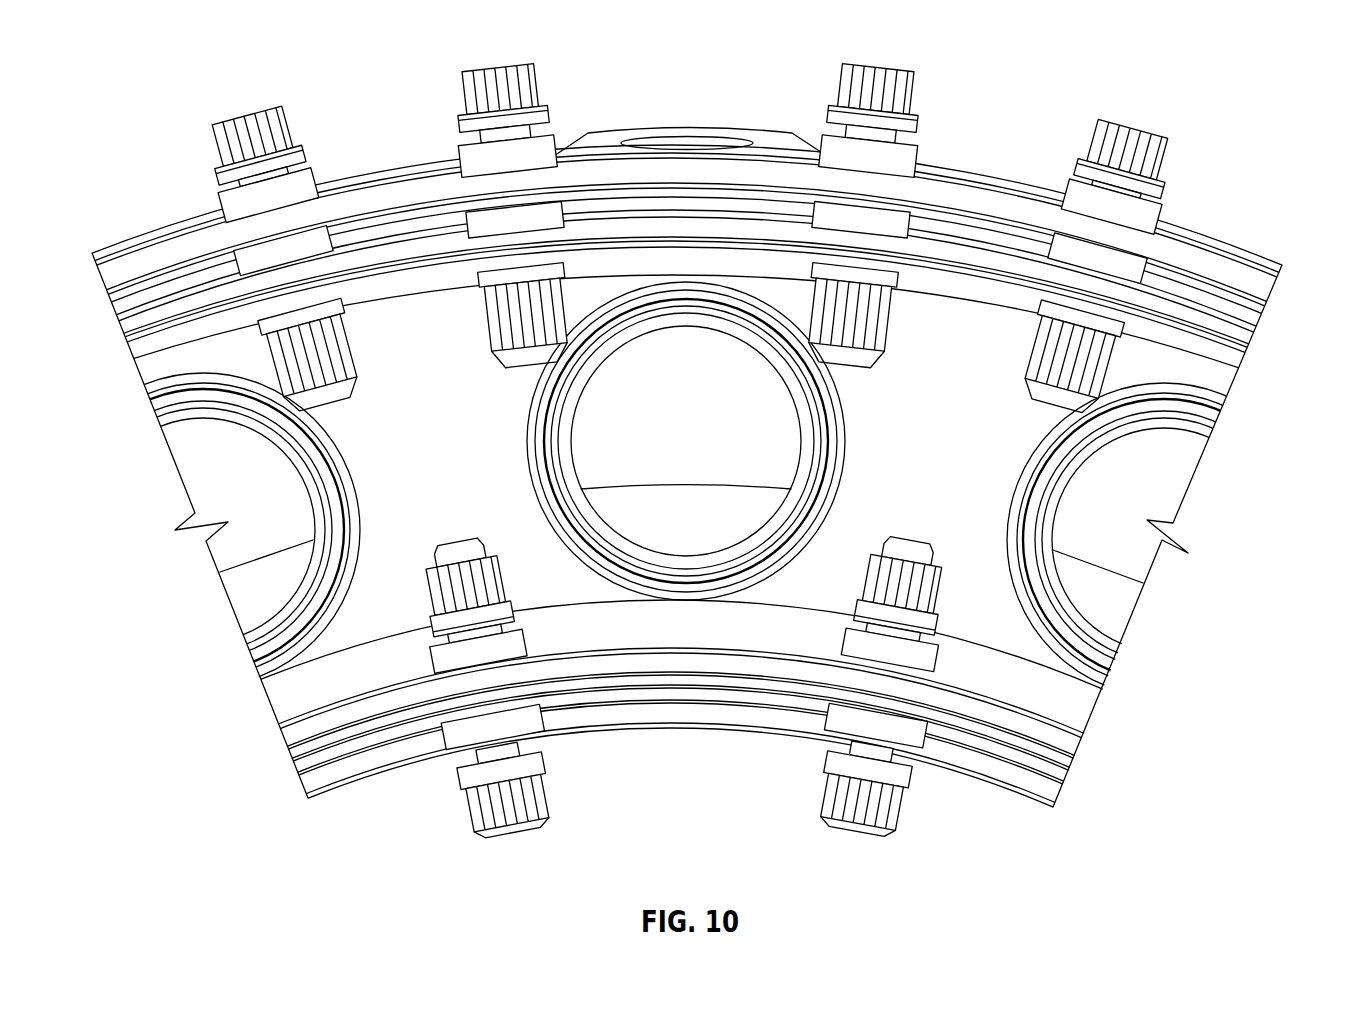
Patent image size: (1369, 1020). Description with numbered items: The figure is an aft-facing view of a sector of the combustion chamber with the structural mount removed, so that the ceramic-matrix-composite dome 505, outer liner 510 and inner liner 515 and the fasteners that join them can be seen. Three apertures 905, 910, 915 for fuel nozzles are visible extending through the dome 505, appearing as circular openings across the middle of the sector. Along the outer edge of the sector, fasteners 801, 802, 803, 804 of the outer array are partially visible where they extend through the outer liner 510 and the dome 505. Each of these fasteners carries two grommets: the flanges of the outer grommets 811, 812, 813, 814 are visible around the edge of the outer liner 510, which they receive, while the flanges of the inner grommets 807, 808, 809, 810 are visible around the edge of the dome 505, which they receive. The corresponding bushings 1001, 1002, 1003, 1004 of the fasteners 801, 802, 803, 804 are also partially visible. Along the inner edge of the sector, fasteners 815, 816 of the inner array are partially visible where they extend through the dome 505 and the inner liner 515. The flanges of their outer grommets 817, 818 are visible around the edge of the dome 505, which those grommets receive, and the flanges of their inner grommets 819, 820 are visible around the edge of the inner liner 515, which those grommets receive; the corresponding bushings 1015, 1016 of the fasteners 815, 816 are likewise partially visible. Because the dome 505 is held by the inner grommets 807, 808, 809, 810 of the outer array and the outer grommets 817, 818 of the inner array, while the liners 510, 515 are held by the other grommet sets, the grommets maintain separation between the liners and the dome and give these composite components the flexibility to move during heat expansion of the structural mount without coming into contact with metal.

The dome 505 is at (133, 327).
The outer liner 510 is at (1268, 293).
The inner liner 515 is at (1050, 792).
The fastener 801 is at (236, 142).
The fastener 802 is at (478, 100).
The fastener 803 is at (893, 80).
The fastener 804 is at (1127, 143).
The inner grommet 807 is at (232, 273).
The inner grommet 808 is at (587, 247).
The inner grommet 809 is at (802, 247).
The inner grommet 810 is at (1123, 320).
The outer grommet 811 is at (293, 233).
The outer grommet 812 is at (527, 193).
The outer grommet 813 is at (833, 193).
The outer grommet 814 is at (1112, 252).
The fastener 815 is at (518, 812).
The fastener 816 is at (838, 812).
The outer grommet 817 is at (405, 672).
The outer grommet 818 is at (950, 683).
The inner grommet 819 is at (540, 715).
The inner grommet 820 is at (826, 708).
The aperture 905 is at (257, 512).
The aperture 910 is at (706, 455).
The aperture 915 is at (1144, 512).
The bushing 1001 is at (298, 248).
The bushing 1002 is at (493, 213).
The bushing 1003 is at (885, 217).
The bushing 1004 is at (1073, 253).
The bushing 1015 is at (470, 710).
The bushing 1016 is at (895, 715).